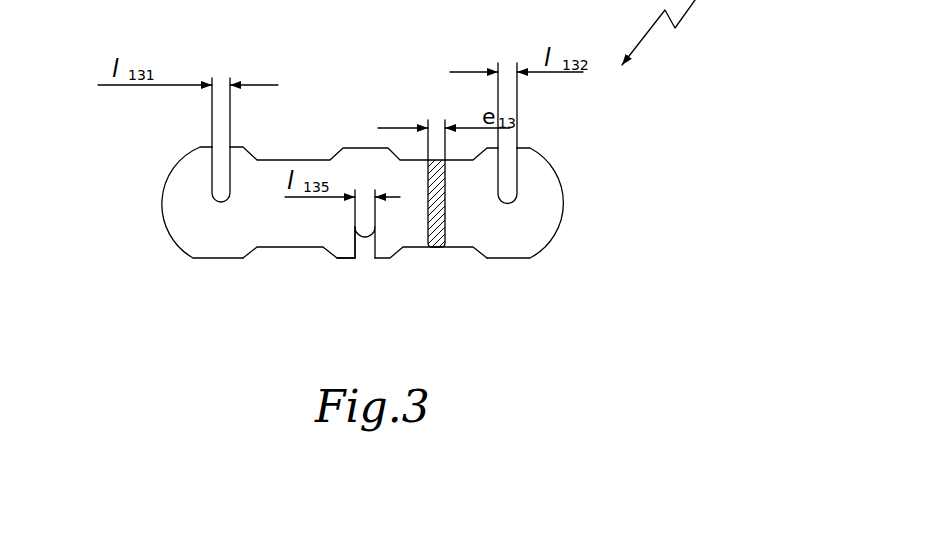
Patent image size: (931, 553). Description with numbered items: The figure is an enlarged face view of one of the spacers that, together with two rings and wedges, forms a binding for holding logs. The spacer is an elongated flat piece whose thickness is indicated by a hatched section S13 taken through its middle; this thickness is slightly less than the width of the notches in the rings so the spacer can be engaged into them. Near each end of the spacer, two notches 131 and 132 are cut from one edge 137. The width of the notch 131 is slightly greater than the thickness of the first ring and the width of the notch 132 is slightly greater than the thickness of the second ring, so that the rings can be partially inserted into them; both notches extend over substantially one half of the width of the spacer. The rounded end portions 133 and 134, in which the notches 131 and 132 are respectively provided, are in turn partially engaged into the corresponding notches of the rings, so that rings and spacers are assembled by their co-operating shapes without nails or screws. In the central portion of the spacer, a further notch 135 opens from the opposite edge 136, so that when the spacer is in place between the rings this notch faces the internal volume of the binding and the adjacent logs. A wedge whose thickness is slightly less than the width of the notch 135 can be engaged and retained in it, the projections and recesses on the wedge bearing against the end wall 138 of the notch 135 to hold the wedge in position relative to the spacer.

The notch 131 is at (216, 205).
The notch 132 is at (509, 190).
The end portion 133 is at (183, 195).
The end portion 134 is at (533, 222).
The notch 135 is at (368, 256).
The edge 136 is at (283, 252).
The edge 137 is at (298, 158).
The end wall 138 is at (354, 228).
The section S13 is at (444, 246).